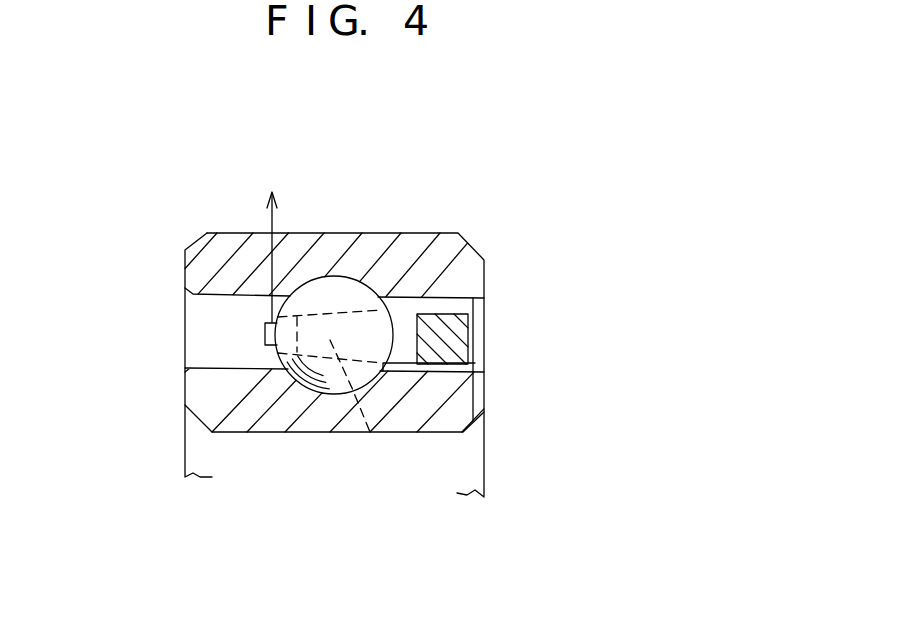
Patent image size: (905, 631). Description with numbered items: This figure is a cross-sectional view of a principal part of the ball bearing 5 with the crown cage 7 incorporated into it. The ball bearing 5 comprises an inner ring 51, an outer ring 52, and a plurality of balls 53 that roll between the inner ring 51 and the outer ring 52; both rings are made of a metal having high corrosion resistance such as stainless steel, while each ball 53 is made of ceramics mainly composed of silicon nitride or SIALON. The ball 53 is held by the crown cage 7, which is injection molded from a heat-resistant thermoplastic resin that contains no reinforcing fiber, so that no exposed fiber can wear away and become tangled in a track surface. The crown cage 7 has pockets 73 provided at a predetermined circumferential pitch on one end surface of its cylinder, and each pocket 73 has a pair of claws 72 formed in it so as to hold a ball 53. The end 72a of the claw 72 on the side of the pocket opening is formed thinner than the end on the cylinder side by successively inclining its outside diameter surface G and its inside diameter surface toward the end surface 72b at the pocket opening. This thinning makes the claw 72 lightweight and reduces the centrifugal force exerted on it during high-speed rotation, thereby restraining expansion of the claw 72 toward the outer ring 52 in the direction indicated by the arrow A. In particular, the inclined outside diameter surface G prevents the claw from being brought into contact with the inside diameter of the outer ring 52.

The ball bearing 5 is at (182, 238).
The inner ring 51 is at (344, 432).
The outer ring 52 is at (333, 250).
The ball 53 is at (357, 292).
The crown cage 7 is at (452, 303).
The claw 72 is at (287, 356).
The end on the side of the opening of the pocket of the claw 72a is at (370, 432).
The end surface on the side of the opening of the pocket of the claw 72b is at (265, 333).
The pocket 73 is at (415, 338).
The outside diameter surface G is at (270, 320).
The arrow indicating direction of claw expansion A is at (271, 236).